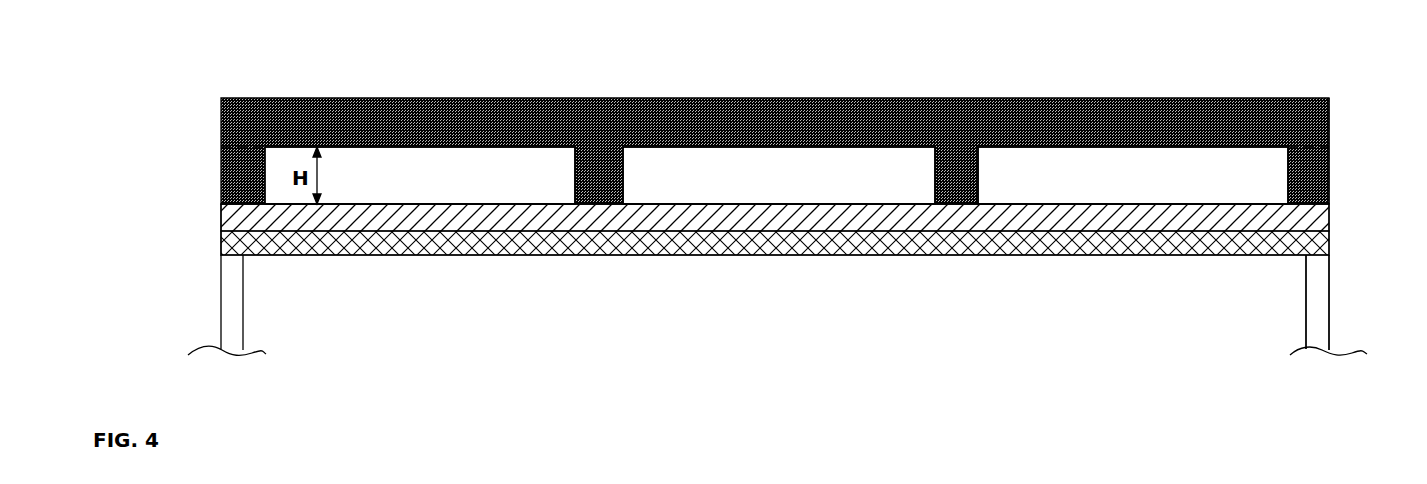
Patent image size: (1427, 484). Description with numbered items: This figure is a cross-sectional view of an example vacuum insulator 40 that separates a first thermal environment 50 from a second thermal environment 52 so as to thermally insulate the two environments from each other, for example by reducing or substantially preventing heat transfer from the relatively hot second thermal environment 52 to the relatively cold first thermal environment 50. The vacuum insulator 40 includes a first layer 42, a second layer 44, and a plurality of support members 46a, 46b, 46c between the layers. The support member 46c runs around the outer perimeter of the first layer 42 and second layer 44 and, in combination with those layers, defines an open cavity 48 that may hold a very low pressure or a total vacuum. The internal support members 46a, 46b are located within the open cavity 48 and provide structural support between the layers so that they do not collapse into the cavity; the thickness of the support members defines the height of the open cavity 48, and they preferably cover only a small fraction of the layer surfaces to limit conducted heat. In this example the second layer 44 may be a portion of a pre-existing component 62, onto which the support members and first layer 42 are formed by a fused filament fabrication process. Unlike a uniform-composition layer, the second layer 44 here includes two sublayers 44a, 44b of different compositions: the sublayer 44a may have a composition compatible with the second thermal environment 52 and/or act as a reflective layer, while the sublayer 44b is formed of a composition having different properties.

The vacuum insulator 40 is at (1308, 54).
The first layer 42 is at (1107, 107).
The second layer 44 is at (213, 204).
The sublayer 44a is at (1310, 240).
The sublayer 44b is at (1320, 218).
The support member 46a is at (603, 160).
The support member 46b is at (957, 160).
The support member 46c is at (1320, 177).
The open cavity 48 is at (431, 188).
The first thermal environment 50 is at (771, 73).
The second thermal environment 52 is at (771, 323).
The component 62 is at (1317, 338).